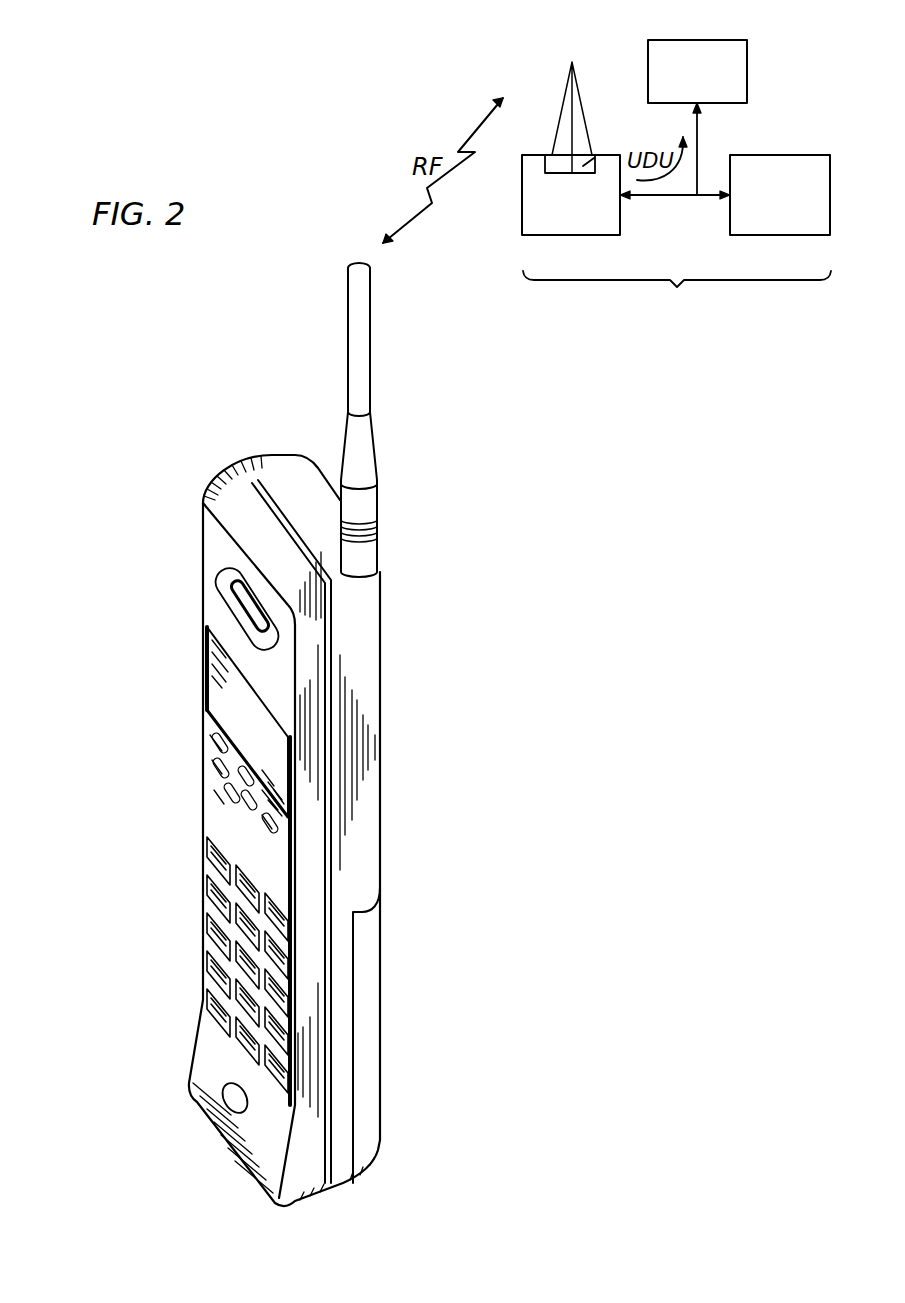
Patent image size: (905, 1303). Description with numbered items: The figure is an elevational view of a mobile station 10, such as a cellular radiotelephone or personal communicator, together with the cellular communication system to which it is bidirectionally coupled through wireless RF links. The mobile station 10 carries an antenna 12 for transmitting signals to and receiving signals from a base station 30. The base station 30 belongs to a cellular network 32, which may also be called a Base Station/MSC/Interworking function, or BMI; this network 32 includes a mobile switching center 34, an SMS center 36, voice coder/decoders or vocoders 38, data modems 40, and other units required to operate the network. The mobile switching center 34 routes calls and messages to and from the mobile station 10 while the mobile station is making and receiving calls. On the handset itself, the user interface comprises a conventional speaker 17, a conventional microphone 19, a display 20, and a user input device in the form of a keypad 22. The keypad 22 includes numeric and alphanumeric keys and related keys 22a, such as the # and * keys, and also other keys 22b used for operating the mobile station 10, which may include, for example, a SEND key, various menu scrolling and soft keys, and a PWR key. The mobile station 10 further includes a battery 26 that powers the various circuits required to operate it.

The mobile station 10 is at (138, 491).
The antenna 12 is at (358, 366).
The speaker 17 is at (238, 592).
The microphone 19 is at (227, 1103).
The display 20 is at (230, 700).
The keypad 22 is at (263, 912).
The related keys 22a is at (255, 905).
The other keys 22b is at (232, 790).
The battery 26 is at (365, 1057).
The base station 30 is at (555, 235).
The cellular network 32 is at (677, 307).
The mobile switching center 34 is at (778, 155).
The SMS center 36 is at (703, 40).
The voice coder/decoders 38 is at (549, 158).
The data modems 40 is at (584, 166).